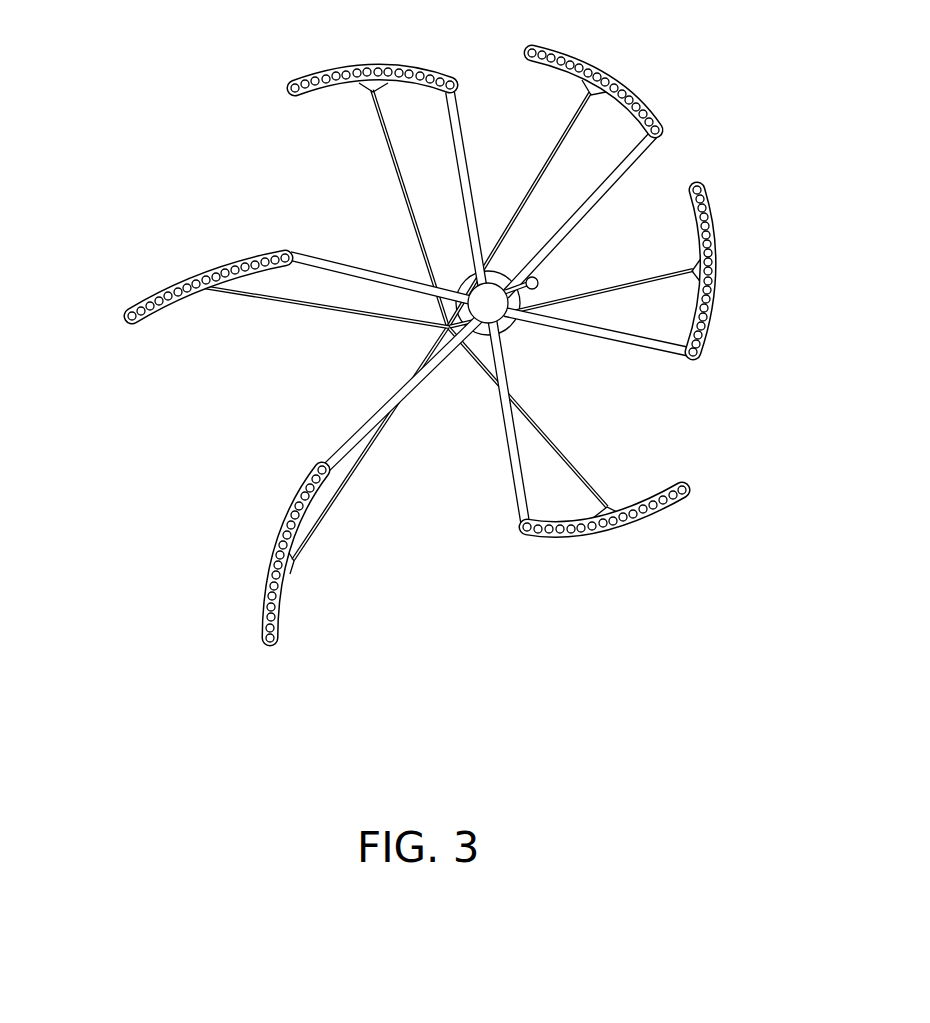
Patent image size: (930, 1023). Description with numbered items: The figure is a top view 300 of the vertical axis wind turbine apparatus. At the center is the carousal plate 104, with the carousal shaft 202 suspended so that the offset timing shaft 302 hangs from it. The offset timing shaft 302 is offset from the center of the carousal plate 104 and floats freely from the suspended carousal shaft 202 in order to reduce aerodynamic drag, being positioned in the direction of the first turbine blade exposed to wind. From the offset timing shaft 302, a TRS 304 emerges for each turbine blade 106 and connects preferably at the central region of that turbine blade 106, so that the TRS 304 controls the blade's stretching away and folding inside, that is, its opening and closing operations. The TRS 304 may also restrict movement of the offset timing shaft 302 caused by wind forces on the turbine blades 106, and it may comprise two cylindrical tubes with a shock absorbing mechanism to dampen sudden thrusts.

The top view 300 is at (112, 92).
The carousal plate 104 is at (516, 297).
The turbine blade 106 is at (713, 262).
The carousal shaft 202 is at (350, 445).
The offset timing shaft 302 is at (426, 262).
The TRS 304 is at (568, 460).